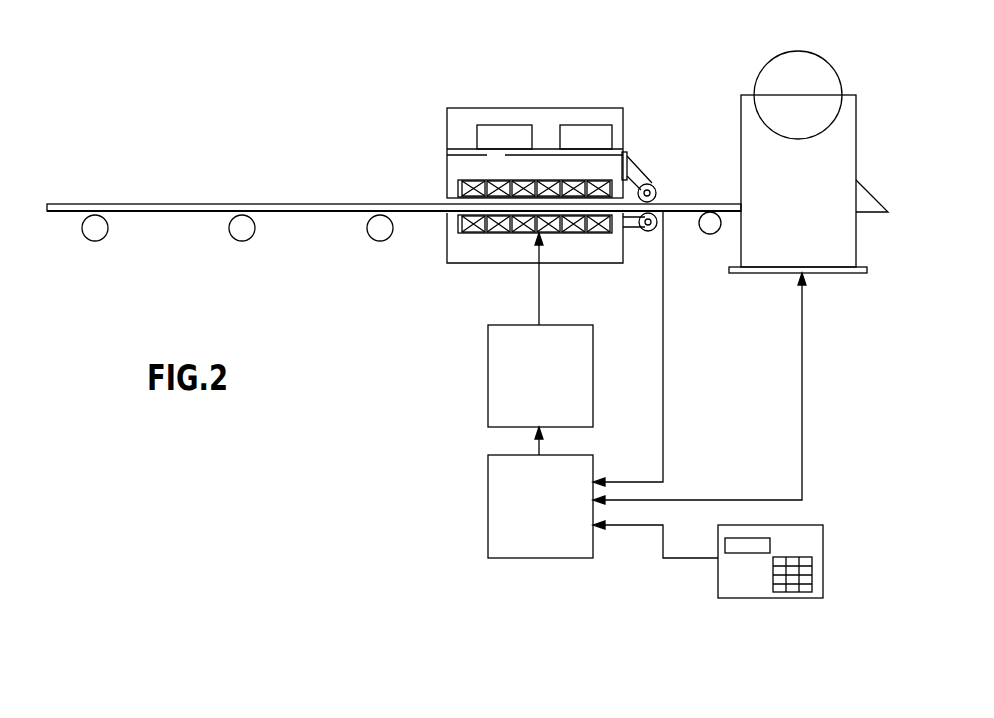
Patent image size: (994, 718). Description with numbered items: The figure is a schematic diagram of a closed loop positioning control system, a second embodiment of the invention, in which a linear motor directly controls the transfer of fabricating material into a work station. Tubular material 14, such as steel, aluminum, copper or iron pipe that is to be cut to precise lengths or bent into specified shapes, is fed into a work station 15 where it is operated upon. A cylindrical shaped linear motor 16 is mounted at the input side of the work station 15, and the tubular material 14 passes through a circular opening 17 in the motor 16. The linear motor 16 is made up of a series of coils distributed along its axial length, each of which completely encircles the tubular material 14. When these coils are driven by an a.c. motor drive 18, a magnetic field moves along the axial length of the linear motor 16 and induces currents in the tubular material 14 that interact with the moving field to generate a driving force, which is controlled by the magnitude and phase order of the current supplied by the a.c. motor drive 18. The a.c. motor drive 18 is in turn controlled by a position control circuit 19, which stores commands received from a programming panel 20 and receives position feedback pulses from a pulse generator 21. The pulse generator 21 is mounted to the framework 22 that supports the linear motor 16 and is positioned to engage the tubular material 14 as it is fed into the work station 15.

The tubular material 14 is at (222, 205).
The work station 15 is at (840, 73).
The cylindrical shaped linear motor 16 is at (446, 181).
The circular opening 17 is at (447, 200).
The a.c. motor drive 18 is at (488, 370).
The position control circuit 19 is at (488, 500).
The programming panel 20 is at (767, 598).
The pulse generator 21 is at (654, 187).
The framework 22 is at (615, 263).